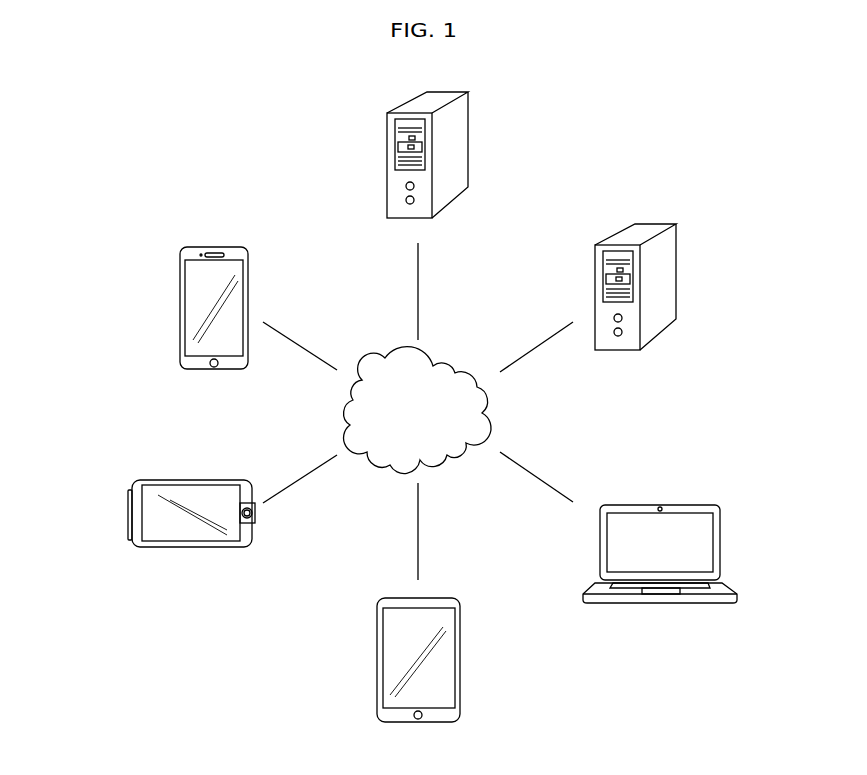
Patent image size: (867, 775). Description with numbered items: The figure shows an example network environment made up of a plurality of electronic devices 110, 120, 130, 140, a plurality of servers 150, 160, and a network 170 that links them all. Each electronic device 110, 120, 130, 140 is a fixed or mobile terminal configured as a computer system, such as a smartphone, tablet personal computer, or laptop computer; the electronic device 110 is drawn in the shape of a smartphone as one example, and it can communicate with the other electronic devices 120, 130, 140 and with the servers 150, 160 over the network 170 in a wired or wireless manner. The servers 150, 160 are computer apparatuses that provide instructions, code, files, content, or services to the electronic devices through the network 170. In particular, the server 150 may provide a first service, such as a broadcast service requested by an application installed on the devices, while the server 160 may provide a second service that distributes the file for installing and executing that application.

The electronic device 110 is at (180, 310).
The electronic device 120 is at (128, 515).
The electronic device 130 is at (460, 658).
The electronic device 140 is at (722, 543).
The server 150 is at (680, 275).
The server 160 is at (470, 142).
The network 170 is at (445, 360).